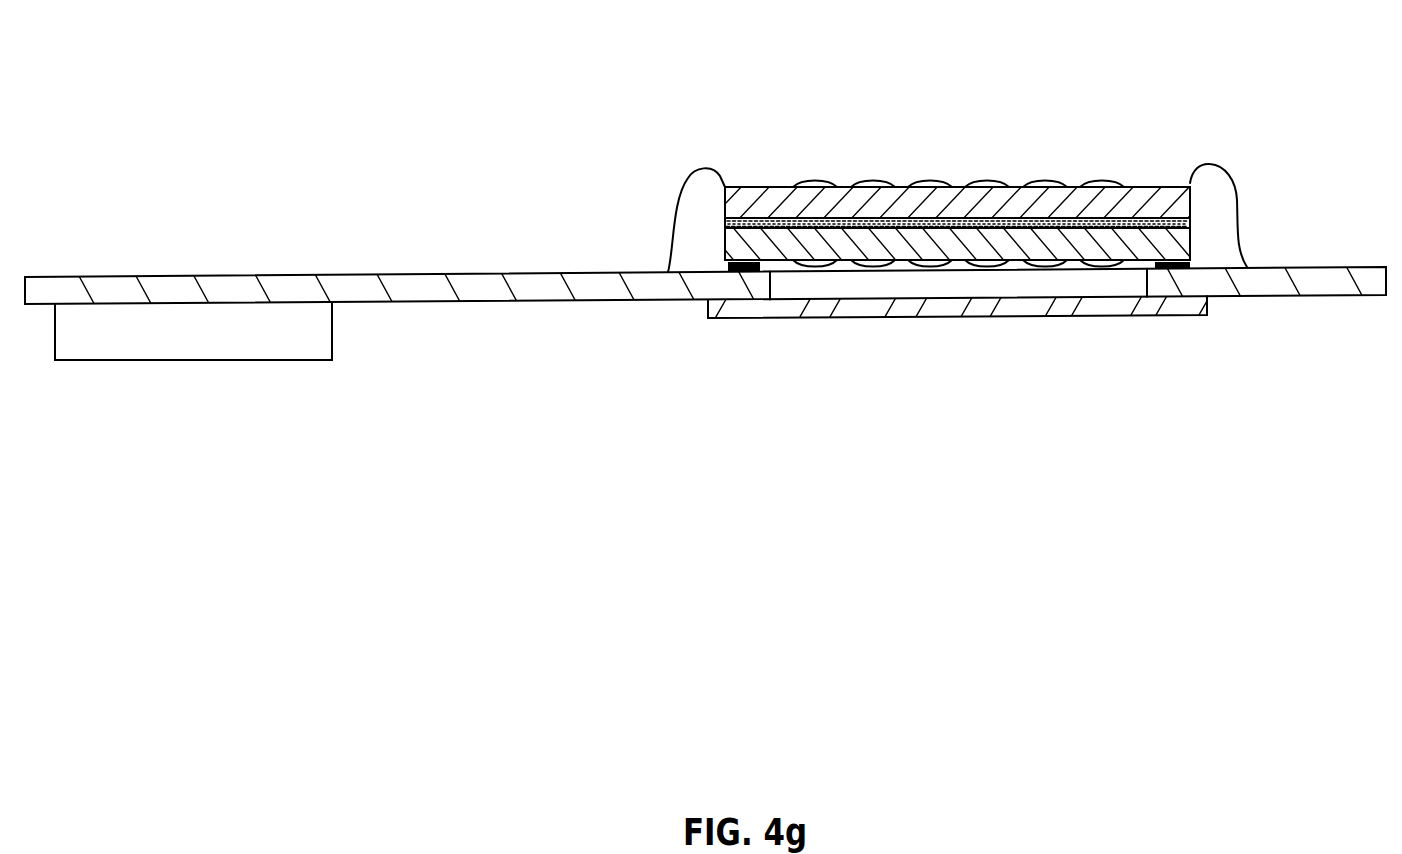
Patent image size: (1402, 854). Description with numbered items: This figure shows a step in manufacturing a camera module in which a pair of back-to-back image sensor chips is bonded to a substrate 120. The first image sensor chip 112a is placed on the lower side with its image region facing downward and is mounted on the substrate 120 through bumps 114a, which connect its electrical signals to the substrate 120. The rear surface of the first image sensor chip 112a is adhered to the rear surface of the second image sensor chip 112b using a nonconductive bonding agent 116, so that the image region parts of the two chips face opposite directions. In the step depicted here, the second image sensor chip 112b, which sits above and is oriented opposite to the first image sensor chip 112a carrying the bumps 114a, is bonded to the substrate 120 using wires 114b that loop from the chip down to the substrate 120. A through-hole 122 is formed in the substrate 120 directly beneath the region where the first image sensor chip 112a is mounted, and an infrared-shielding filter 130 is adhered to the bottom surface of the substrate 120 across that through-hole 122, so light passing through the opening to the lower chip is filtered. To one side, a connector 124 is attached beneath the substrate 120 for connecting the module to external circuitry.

The first image sensor chip 112a is at (860, 247).
The second image sensor chip 112b is at (782, 200).
The nonconductive bonding agent 116 is at (918, 223).
The bump 114a is at (745, 270).
The wires 114b is at (675, 213).
The substrate 120 is at (545, 287).
The through-hole 122 is at (900, 284).
The connector 124 is at (217, 325).
The infrared-shielding filter 130 is at (1095, 305).